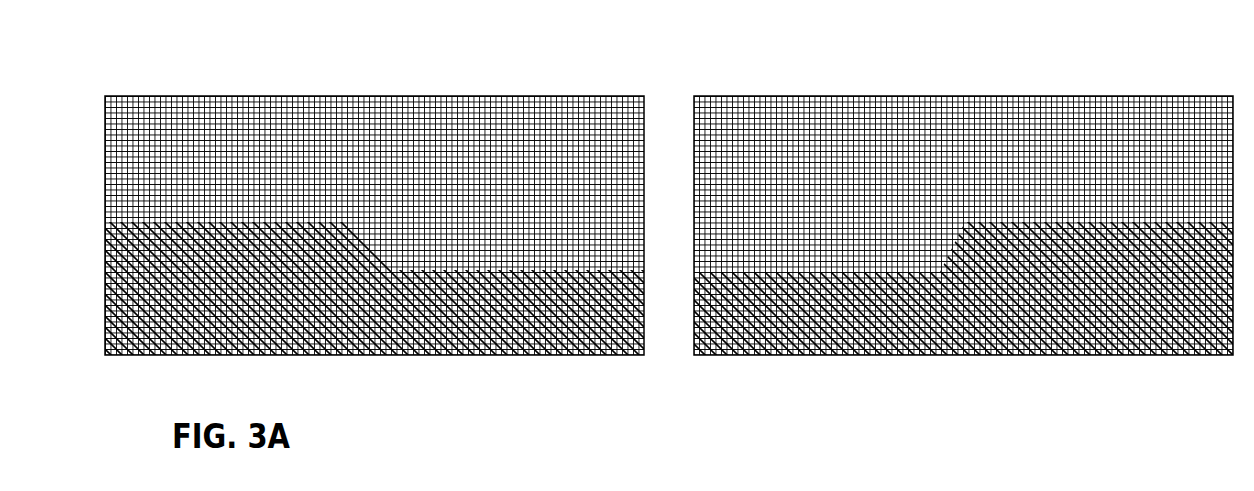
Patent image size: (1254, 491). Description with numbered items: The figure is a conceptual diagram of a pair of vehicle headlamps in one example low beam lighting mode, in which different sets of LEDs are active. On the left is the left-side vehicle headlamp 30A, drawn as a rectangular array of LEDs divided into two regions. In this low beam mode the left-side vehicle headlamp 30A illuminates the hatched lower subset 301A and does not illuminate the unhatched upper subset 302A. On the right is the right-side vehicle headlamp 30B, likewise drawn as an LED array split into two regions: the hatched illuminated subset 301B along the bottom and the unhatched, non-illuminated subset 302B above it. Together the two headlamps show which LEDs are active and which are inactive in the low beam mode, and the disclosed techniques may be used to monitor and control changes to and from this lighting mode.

The left-side vehicle headlamp 30A is at (374, 236).
The subset 302A is at (578, 140).
The subset 301A is at (490, 340).
The right-side vehicle headlamp 30B is at (963, 229).
The subset 302B is at (1164, 108).
The subset 301B is at (958, 330).